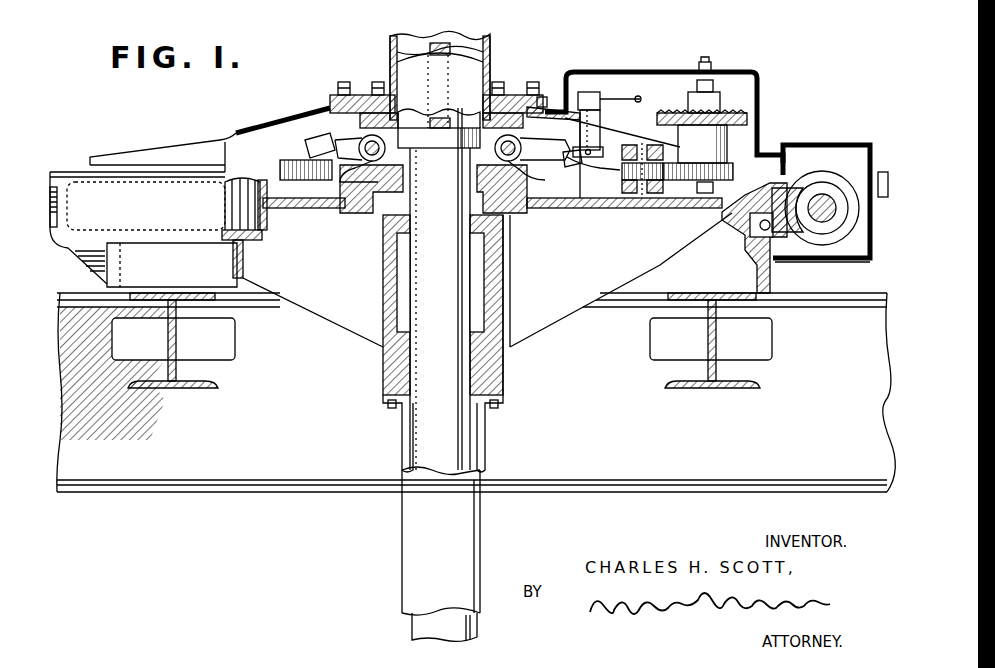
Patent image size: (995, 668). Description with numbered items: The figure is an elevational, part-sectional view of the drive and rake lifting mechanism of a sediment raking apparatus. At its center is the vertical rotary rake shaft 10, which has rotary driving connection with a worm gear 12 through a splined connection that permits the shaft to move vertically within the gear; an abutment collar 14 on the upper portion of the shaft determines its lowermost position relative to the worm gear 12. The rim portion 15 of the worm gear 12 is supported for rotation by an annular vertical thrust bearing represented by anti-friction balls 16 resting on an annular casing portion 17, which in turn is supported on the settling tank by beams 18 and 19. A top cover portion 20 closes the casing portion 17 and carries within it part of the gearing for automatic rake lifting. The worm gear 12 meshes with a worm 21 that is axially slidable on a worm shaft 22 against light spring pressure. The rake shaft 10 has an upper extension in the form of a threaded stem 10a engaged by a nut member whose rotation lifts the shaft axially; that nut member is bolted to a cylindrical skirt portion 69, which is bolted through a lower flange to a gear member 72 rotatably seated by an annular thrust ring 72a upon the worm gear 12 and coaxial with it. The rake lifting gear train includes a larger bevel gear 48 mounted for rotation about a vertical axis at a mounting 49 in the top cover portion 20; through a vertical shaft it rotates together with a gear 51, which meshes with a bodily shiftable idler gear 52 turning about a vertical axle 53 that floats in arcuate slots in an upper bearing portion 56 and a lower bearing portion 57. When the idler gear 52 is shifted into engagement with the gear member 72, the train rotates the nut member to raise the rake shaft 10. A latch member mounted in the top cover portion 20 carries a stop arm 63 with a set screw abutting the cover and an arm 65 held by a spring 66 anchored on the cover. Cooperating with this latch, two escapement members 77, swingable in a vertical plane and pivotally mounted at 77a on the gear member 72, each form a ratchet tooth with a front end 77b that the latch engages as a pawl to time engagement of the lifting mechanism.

The rake shaft 10 is at (374, 630).
The threaded stem 10a is at (445, 43).
The worm gear 12 is at (247, 223).
The abutment collar 14 is at (460, 148).
The rim portion 15 is at (795, 160).
The anti-friction balls 16 is at (744, 243).
The annular casing portion 17 is at (833, 262).
The beam 18 is at (193, 493).
The beam 19 is at (196, 390).
The top cover portion 20 is at (240, 133).
The worm 21 is at (823, 171).
The worm shaft 22 is at (833, 213).
The bevel gear 48 is at (733, 117).
The mounting 49 is at (725, 140).
The gear 51 is at (772, 180).
The idler gear 52 is at (657, 200).
The vertical axle 53 is at (647, 193).
The upper bearing portion 56 is at (630, 145).
The lower bearing portion 57 is at (624, 198).
The stop arm 63 is at (588, 92).
The arm 65 is at (613, 97).
The spring 66 is at (642, 100).
The skirt portion 69 is at (405, 70).
The gear member 72 is at (285, 162).
The annular thrust ring 72a is at (370, 217).
The escapement member 77 is at (307, 134).
The pivot 77a is at (340, 135).
The front end 77b is at (505, 160).